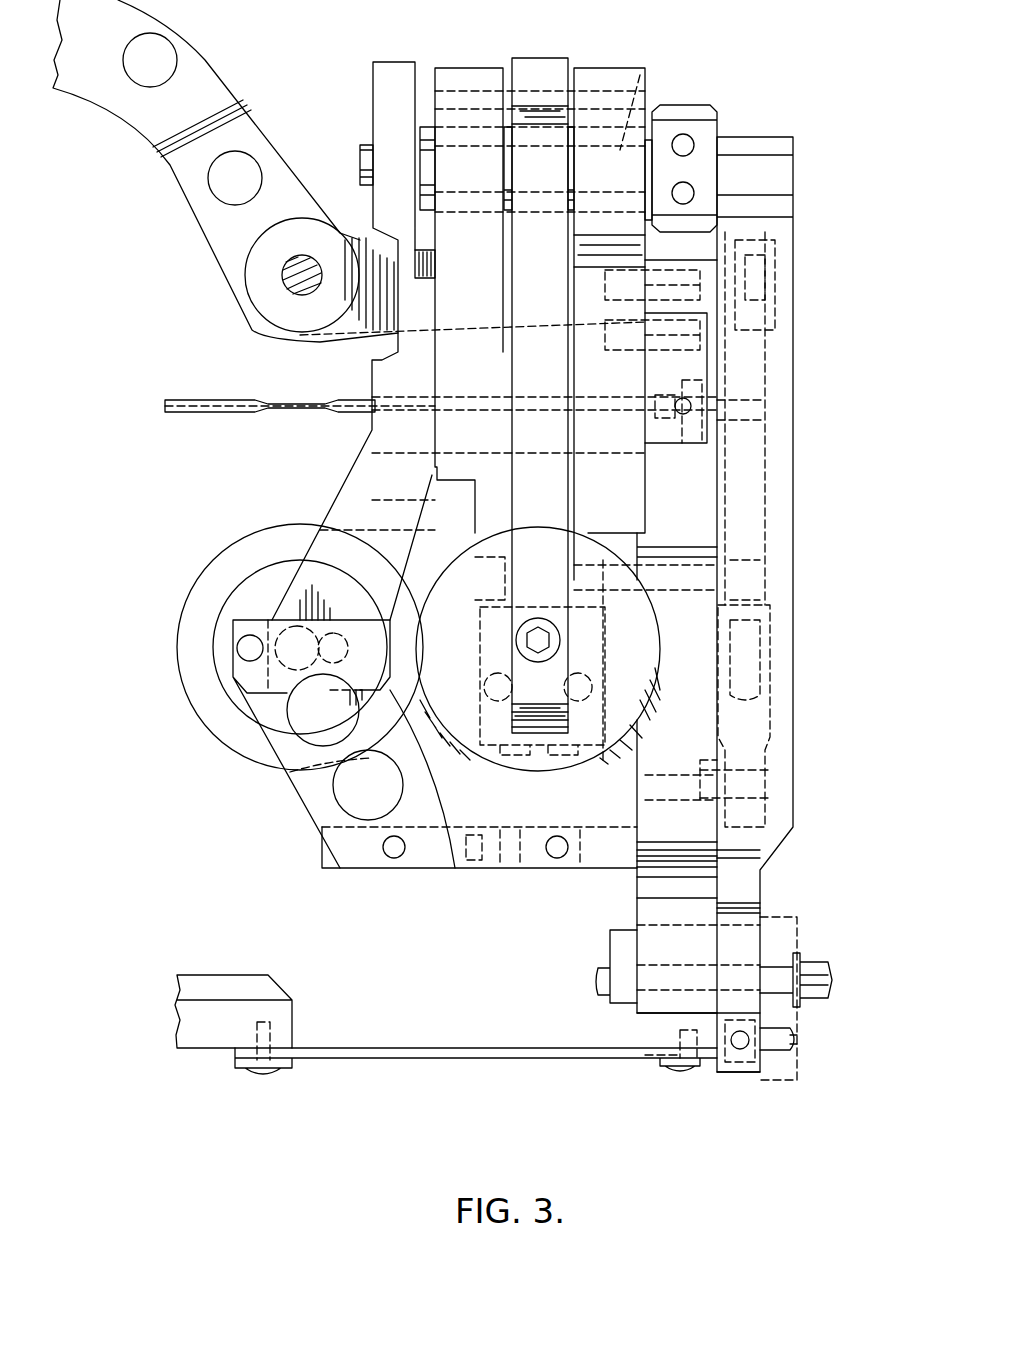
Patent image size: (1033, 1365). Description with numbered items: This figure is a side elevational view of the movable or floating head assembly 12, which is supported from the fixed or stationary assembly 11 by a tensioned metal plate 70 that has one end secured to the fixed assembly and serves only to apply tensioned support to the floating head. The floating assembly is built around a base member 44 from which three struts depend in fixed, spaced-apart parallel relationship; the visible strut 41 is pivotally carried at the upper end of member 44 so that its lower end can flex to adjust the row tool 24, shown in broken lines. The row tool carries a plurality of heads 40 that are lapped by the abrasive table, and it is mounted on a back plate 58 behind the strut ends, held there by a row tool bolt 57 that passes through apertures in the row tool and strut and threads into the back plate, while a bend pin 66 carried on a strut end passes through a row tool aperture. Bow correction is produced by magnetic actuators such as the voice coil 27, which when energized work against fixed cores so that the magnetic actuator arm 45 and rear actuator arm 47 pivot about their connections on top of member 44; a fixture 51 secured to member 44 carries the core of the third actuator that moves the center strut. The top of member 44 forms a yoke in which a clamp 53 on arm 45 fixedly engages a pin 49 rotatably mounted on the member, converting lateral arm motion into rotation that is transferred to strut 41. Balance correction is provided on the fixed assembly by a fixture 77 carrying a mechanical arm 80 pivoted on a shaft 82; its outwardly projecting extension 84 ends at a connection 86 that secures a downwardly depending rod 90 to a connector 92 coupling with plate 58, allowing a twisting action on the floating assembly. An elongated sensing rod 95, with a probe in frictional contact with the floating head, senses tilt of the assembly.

The fixed or stationary assembly 11 is at (300, 988).
The floating head assembly 12 is at (805, 122).
The row tool 24 is at (800, 1072).
The magnetic actuator coil 27 is at (455, 760).
The heads 40 is at (790, 1090).
The strut 41 is at (770, 845).
The base member 44 is at (612, 68).
The magnetic actuator arm 45 is at (548, 470).
The rear actuator arm 47 is at (400, 305).
The pin 49 is at (648, 82).
The fixture 51 is at (313, 800).
The clamp 53 is at (530, 58).
The row tool bolt 57 is at (820, 960).
The back plate 58 is at (652, 888).
The bend pin 66 is at (800, 1040).
The tensioned metal plate 70 is at (470, 1058).
The fixture 77 is at (200, 1040).
The mechanical arm 80 is at (238, 102).
The shaft 82 is at (284, 274).
The extension 84 is at (585, 325).
The connection 86 is at (770, 290).
The rod 90 is at (775, 565).
The connector 92 is at (793, 778).
The sensing rod 95 is at (322, 412).